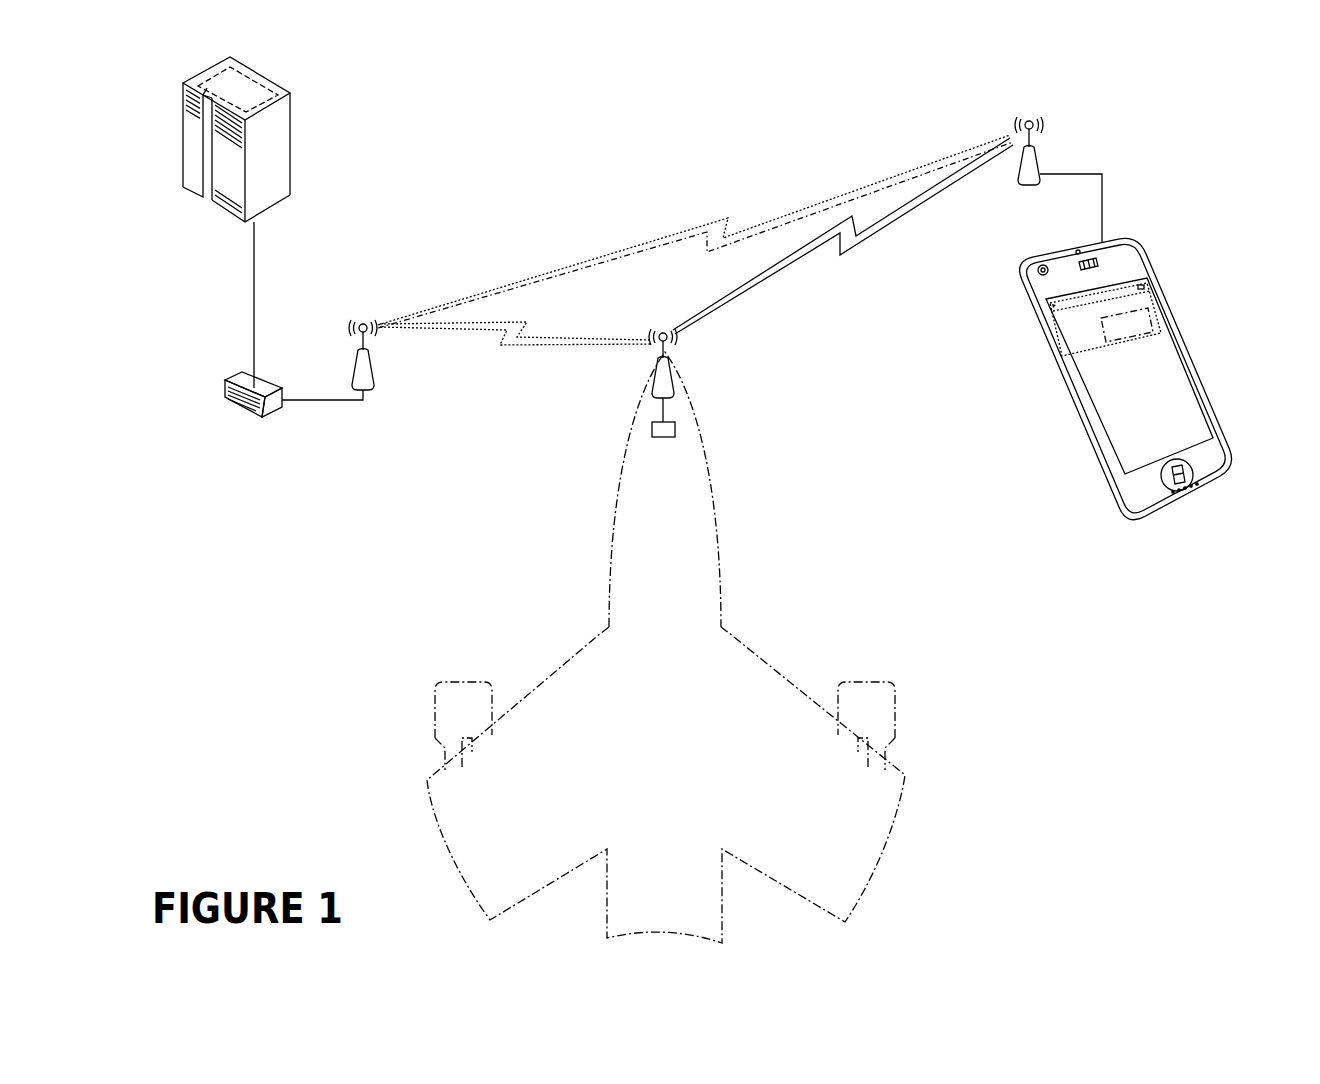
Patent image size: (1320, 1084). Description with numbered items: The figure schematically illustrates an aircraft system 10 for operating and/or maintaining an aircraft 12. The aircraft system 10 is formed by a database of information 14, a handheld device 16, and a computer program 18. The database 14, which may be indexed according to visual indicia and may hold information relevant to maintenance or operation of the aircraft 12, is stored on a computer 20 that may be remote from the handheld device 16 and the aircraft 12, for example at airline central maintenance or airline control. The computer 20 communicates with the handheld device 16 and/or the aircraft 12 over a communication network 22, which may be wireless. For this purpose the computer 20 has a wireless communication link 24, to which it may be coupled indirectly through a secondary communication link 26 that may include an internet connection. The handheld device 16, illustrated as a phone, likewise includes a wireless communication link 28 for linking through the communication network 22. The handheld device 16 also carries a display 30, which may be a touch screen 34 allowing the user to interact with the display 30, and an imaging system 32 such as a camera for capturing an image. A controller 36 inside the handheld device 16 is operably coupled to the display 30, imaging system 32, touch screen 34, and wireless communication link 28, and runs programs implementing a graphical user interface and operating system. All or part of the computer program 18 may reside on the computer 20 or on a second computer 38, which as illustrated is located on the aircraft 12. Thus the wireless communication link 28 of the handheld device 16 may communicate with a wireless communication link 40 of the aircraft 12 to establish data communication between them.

The aircraft system 10 is at (576, 102).
The aircraft 12 is at (722, 497).
The database of information 14 is at (237, 139).
The handheld device 16 is at (1116, 365).
The computer program 18 is at (1150, 307).
The computer 20 is at (281, 84).
The communication network 22 is at (718, 212).
The wireless communication link 24 is at (371, 377).
The secondary communication link 26 is at (243, 376).
The wireless communication link 28 is at (1031, 166).
The display 30 is at (1153, 376).
The imaging system 32 is at (1040, 266).
The touch screen 34 is at (1166, 405).
The controller 36 is at (1125, 292).
The second computer 38 is at (652, 431).
The wireless communication link 40 is at (672, 377).